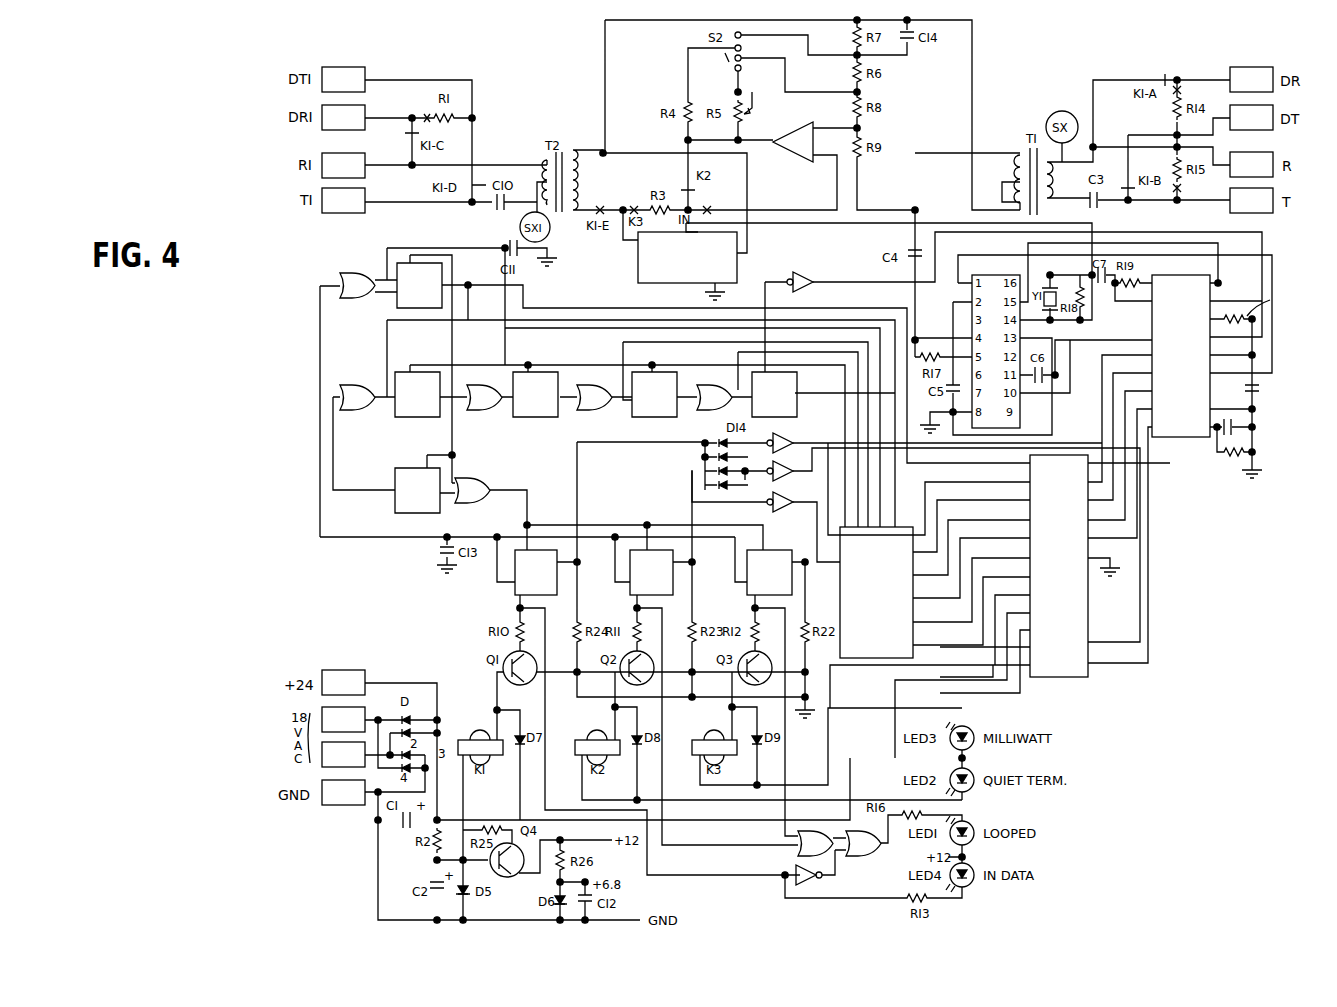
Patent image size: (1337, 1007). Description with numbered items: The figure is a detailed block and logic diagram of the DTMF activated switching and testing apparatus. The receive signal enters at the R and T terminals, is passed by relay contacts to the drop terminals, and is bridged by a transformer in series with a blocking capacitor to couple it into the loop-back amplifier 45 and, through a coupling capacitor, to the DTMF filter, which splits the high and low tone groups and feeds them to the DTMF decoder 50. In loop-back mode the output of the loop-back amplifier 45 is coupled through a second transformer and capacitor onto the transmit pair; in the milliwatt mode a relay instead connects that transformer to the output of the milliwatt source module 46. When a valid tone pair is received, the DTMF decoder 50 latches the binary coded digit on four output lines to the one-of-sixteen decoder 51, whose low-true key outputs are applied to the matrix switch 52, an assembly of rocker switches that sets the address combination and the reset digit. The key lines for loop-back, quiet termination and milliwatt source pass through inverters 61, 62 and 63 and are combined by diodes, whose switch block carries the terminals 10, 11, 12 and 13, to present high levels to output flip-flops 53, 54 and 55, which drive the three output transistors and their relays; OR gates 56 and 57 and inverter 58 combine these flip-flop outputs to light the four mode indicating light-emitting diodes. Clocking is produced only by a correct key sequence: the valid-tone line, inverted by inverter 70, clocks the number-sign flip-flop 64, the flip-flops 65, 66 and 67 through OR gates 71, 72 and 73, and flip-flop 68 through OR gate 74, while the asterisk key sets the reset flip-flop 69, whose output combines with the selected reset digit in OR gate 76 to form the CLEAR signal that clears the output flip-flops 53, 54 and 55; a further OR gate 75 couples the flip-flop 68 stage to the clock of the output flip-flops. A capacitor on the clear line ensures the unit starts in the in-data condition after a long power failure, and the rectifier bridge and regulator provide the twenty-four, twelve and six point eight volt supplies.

The switch position 10 is at (701, 496).
The switch position 11 is at (767, 506).
The switch position 12 is at (763, 488).
The switch position 13 is at (757, 458).
The loop-back amplifier 45 is at (808, 158).
The milliwatt source module 46 is at (632, 282).
The DTMF decoder 50 is at (1204, 437).
The one-of-sixteen decoder 51 is at (1052, 677).
The matrix switch 52 is at (874, 660).
The output flip-flop 53 is at (515, 598).
The output flip-flop 54 is at (630, 598).
The output flip-flop 55 is at (747, 598).
The OR gate 56 is at (798, 855).
The OR gate 57 is at (874, 852).
The inverter 58 is at (826, 880).
The inverter 61 is at (800, 438).
The inverter 62 is at (800, 468).
The inverter 63 is at (798, 500).
The # flip-flop 64 is at (798, 408).
The flip-flop 65 is at (676, 412).
The flip-flop 66 is at (540, 418).
The flip-flop 67 is at (424, 420).
The flip-flop 68 is at (440, 512).
The reset flip-flop 69 is at (387, 318).
The inverter 70 is at (797, 278).
The OR gate 71 is at (716, 408).
The OR gate 72 is at (606, 410).
The OR gate 73 is at (492, 412).
The OR gate 74 is at (365, 412).
The OR gate 75 is at (472, 480).
The OR gate 76 is at (368, 272).